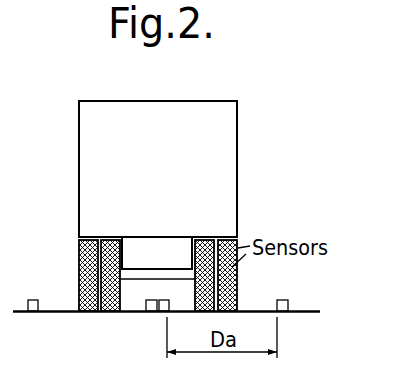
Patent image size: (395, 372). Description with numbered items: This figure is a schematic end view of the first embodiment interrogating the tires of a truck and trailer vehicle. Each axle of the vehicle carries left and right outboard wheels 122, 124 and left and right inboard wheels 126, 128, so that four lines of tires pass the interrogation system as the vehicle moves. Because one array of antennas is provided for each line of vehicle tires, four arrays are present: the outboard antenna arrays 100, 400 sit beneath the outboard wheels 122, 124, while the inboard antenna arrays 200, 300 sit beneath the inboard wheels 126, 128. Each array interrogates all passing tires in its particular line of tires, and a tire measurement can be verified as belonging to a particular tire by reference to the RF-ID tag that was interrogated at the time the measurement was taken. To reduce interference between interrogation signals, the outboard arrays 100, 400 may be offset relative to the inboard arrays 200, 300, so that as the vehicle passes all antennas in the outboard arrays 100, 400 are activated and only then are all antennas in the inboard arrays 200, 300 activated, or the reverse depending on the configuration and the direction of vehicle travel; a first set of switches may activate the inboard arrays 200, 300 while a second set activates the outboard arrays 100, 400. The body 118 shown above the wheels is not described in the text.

The housing 118 is at (157, 100).
The left outboard wheel 122 is at (87, 239).
The right outboard wheel 124 is at (228, 239).
The left inboard wheel 126 is at (110, 239).
The right inboard wheel 128 is at (205, 239).
The outboard antenna array 100 is at (288, 298).
The inboard antenna array 200 is at (163, 315).
The inboard antenna array 300 is at (142, 312).
The outboard antenna array 400 is at (33, 300).